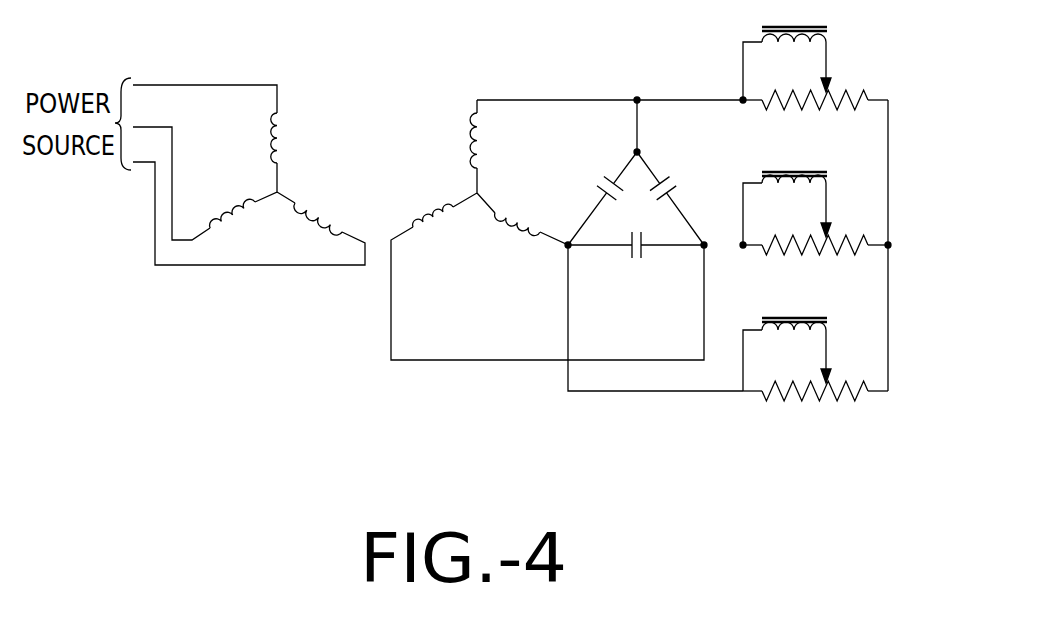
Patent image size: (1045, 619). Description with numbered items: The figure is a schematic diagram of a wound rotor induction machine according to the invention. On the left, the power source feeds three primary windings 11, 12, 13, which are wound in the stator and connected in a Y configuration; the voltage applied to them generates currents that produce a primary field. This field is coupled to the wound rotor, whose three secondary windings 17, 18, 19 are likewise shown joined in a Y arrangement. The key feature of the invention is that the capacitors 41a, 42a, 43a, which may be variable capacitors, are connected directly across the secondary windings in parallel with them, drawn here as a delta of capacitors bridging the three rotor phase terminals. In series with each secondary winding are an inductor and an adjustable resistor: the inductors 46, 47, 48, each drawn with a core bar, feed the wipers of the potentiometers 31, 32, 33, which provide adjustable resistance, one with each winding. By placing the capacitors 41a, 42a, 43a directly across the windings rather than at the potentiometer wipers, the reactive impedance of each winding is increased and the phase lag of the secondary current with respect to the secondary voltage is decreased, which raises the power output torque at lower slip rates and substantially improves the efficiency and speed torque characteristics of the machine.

The primary winding 11 is at (277, 138).
The primary winding 12 is at (246, 203).
The primary winding 13 is at (325, 218).
The secondary winding 17 is at (474, 129).
The secondary winding 18 is at (447, 207).
The secondary winding 19 is at (523, 218).
The capacitor 41a is at (610, 170).
The capacitor 42a is at (664, 172).
The capacitor 43a is at (644, 252).
The potentiometer 31 is at (818, 108).
The potentiometer 32 is at (829, 254).
The potentiometer 33 is at (815, 398).
The inductor 46 is at (826, 41).
The inductor 47 is at (826, 181).
The inductor 48 is at (826, 328).